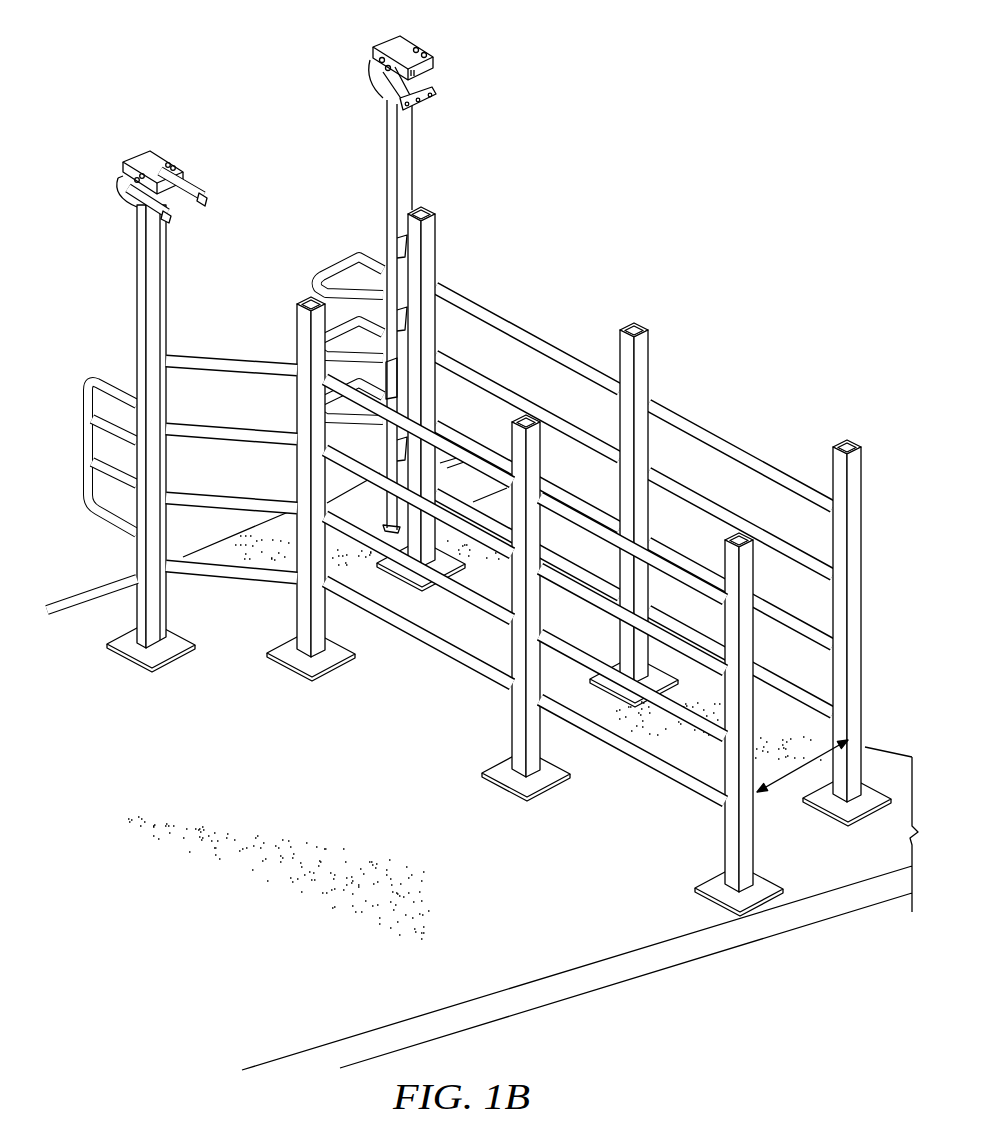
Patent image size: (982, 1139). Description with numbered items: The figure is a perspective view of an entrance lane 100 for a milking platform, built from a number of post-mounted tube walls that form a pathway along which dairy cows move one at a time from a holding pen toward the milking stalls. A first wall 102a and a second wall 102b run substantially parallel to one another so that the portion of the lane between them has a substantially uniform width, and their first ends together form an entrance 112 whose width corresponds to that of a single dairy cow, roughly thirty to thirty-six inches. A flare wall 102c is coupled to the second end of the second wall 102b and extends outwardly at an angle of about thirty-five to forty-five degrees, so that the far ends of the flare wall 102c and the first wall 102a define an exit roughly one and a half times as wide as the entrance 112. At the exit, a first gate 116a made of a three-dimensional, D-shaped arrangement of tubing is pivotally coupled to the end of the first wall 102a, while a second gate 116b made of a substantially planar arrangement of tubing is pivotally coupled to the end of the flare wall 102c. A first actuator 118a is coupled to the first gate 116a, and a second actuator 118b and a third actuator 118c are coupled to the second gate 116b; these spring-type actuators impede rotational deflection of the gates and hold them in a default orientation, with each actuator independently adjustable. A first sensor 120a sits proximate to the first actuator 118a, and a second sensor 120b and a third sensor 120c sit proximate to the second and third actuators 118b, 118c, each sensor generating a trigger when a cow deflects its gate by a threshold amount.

The entrance lane 100 is at (627, 170).
The first wall 102a is at (673, 407).
The second wall 102b is at (441, 657).
The flare wall 102c is at (242, 584).
The entrance 112 is at (790, 782).
The first gate 116a is at (344, 246).
The second gate 116b is at (97, 527).
The first actuator 118a is at (422, 80).
The second actuator 118b is at (199, 188).
The third actuator 118c is at (171, 204).
The first sensor 120a is at (386, 40).
The second sensor 120b is at (137, 153).
The third sensor 120c is at (123, 168).